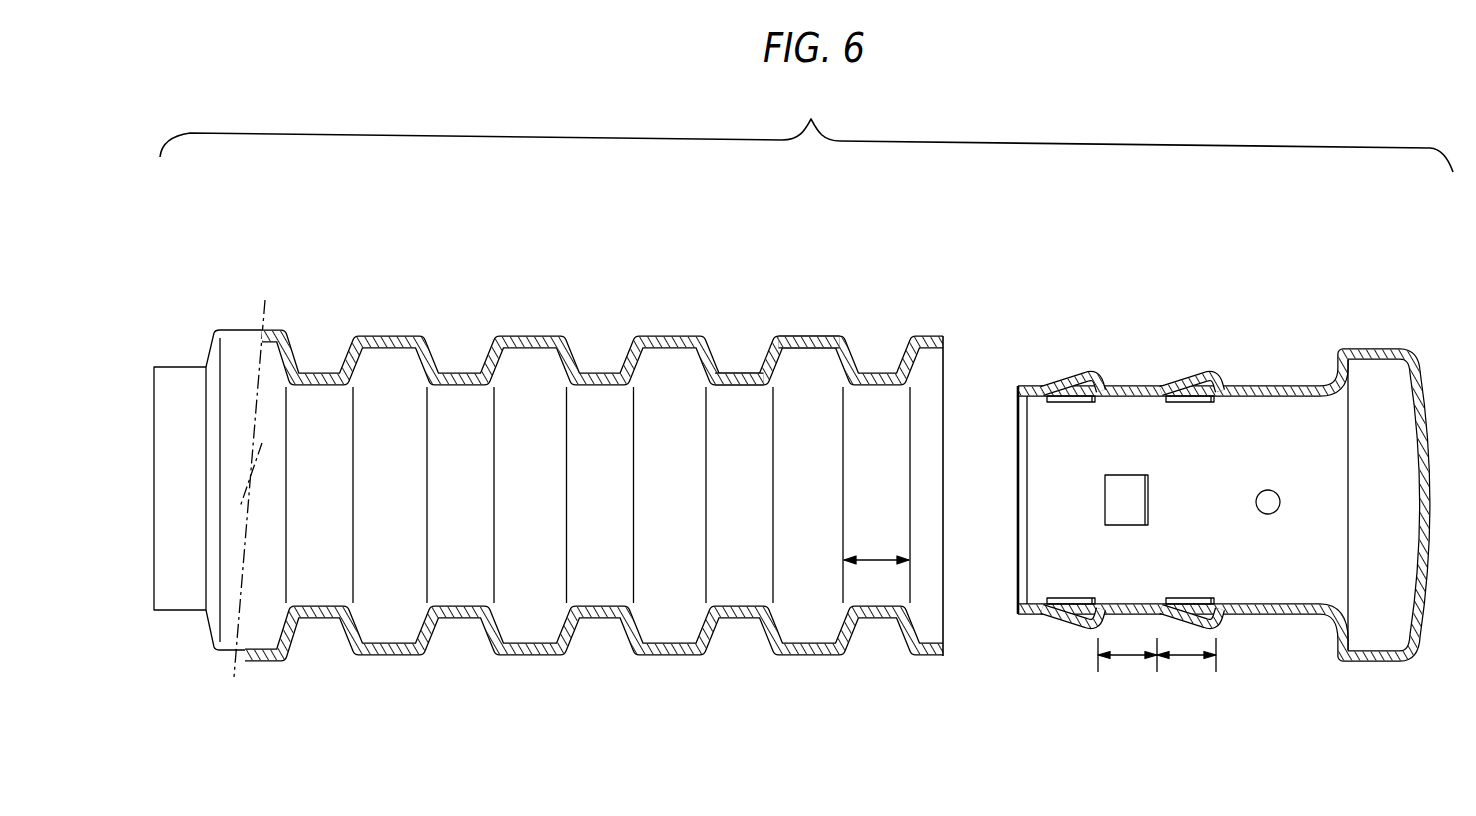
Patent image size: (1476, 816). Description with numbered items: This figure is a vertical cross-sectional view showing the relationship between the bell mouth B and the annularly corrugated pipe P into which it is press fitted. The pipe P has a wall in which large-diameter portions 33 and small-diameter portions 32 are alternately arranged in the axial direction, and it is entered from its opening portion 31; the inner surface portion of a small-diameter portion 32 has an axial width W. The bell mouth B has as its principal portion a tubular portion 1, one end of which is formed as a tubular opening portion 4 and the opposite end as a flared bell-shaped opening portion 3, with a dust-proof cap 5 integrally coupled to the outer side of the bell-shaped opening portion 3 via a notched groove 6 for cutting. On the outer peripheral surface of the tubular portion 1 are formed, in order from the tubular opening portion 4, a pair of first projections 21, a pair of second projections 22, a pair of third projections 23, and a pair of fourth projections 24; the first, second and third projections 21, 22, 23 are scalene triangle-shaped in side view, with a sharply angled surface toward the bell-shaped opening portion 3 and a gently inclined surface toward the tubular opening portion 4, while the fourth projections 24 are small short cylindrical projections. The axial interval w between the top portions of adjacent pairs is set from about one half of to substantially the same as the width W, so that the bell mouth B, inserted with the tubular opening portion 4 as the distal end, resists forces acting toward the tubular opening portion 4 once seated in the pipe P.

The annularly corrugated pipe P is at (398, 290).
The opening portion 31 is at (940, 378).
The small-diameter portion 32 is at (736, 375).
The large-diameter portion 33 is at (811, 337).
The axial width W is at (874, 563).
The bell mouth B is at (1375, 316).
The tubular portion 1 is at (1304, 430).
The tubular opening portion 4 is at (1018, 590).
The dust-proof cap 5 is at (1400, 452).
The bell-shaped opening portion 3 is at (1319, 622).
The notched groove 6 is at (1345, 663).
The first projections 21 is at (1088, 374).
The third projections 23 is at (1204, 375).
The second projections 22 is at (1124, 490).
The fourth projections 24 is at (1267, 489).
The interval w is at (1157, 663).